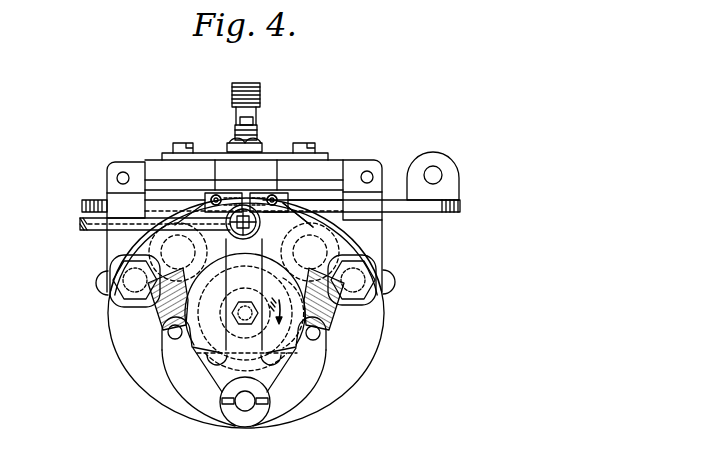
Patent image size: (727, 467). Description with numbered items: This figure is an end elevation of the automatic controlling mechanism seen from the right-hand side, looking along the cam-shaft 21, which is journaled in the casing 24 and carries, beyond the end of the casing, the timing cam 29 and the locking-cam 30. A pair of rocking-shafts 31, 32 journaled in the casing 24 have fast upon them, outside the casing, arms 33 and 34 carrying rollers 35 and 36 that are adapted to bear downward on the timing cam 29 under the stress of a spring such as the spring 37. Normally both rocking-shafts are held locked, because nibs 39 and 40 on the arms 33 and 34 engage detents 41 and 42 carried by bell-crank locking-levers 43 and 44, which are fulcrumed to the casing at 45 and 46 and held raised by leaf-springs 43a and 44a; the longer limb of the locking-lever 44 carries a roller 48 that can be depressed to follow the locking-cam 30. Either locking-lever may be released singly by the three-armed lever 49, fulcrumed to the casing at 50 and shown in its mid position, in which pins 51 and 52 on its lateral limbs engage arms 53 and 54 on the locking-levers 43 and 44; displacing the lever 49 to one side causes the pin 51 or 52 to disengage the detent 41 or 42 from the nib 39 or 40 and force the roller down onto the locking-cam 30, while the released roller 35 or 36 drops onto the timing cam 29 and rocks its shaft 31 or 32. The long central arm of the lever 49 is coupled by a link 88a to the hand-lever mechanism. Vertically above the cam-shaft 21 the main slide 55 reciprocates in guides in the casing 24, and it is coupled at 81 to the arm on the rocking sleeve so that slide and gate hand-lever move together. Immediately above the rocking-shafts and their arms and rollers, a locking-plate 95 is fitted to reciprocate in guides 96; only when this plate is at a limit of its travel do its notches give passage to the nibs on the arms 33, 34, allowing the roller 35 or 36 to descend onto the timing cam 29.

The cam-shaft 21 is at (240, 340).
The casing 24 is at (350, 379).
The timing cam 29 is at (283, 408).
The locking-cam 30 is at (208, 362).
The rocking-shaft 31 is at (162, 249).
The rocking-shaft 32 is at (327, 252).
The arm 33 is at (207, 207).
The arm 34 is at (290, 220).
The roller 35 is at (193, 215).
The roller 36 is at (280, 220).
The spring 37 is at (190, 154).
The nib 39 is at (175, 281).
The nib 40 is at (273, 300).
The detent 41 is at (225, 282).
The detent 42 is at (285, 313).
The locking-lever 43 is at (143, 332).
The leaf-spring 43a is at (135, 237).
The locking-lever 44 is at (354, 320).
The leaf-spring 44a is at (352, 241).
The fulcrum 45 is at (118, 307).
The fulcrum 46 is at (384, 306).
The roller 48 is at (287, 153).
The three-armed lever 49 is at (317, 388).
The fulcrum 50 is at (247, 406).
The pin 51 is at (170, 337).
The pin 52 is at (319, 334).
The arm 53 is at (174, 360).
The arm 54 is at (347, 366).
The main slide 55 is at (223, 168).
The coupling point 81 is at (256, 84).
The link 88a is at (80, 222).
The locking-plate 95 is at (402, 207).
The guides 96 is at (133, 201).